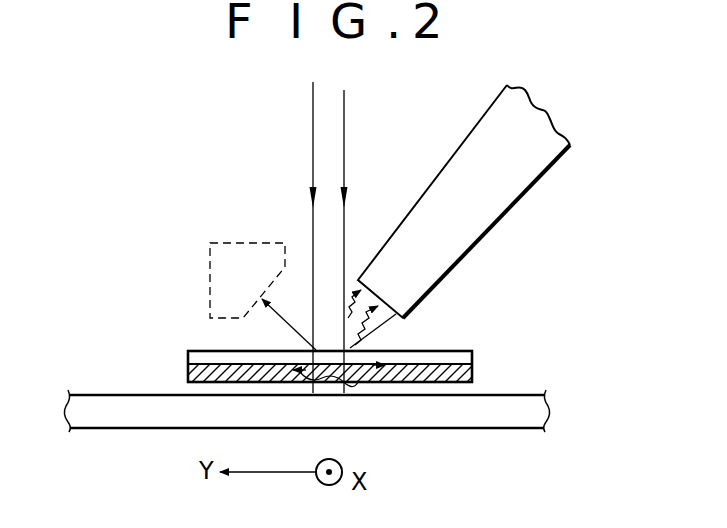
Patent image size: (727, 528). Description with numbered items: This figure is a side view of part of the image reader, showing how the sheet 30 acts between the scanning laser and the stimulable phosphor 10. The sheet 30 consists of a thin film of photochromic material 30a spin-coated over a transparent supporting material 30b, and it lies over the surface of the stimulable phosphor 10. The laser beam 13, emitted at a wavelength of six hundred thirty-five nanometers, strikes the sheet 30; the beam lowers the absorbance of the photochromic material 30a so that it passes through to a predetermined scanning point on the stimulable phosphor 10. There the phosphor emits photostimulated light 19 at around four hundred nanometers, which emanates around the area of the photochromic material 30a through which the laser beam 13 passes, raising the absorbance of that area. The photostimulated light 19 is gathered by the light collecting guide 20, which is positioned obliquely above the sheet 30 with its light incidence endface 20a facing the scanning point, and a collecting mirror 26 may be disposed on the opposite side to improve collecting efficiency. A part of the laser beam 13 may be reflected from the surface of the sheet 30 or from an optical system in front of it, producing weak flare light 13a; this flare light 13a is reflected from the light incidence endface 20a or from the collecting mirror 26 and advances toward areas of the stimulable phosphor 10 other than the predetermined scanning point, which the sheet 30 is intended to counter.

The stimulable phosphor 10 is at (92, 394).
The laser beam 13 is at (313, 135).
The flare light 13a is at (280, 317).
The photostimulated light 19 is at (342, 350).
The light collecting guide 20 is at (544, 186).
The light incidence endface 20a is at (347, 310).
The collecting mirror 26 is at (207, 272).
The sheet 30 is at (185, 358).
The photochromic material 30a is at (475, 370).
The transparent supporting material 30b is at (473, 353).